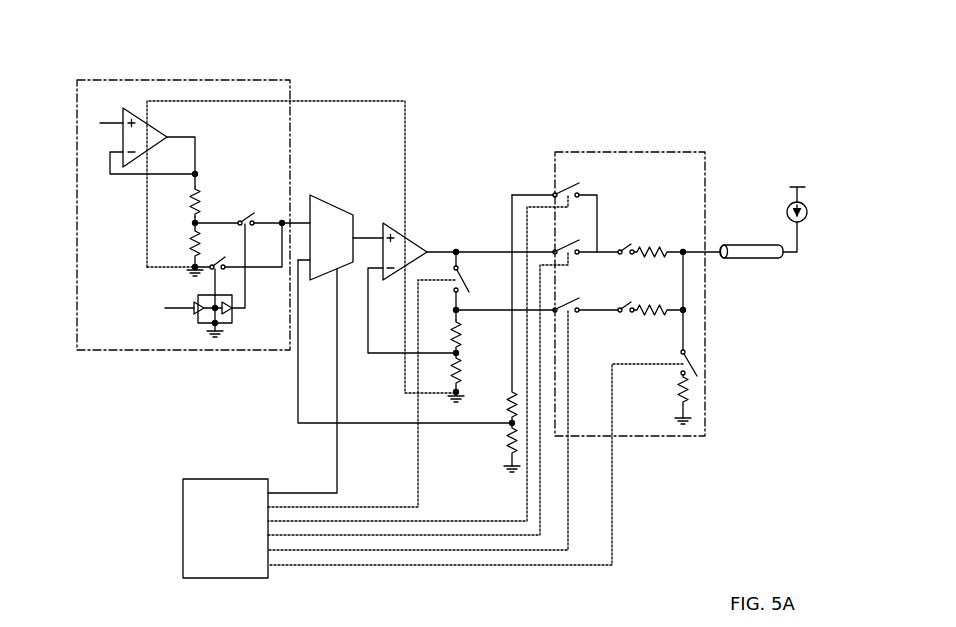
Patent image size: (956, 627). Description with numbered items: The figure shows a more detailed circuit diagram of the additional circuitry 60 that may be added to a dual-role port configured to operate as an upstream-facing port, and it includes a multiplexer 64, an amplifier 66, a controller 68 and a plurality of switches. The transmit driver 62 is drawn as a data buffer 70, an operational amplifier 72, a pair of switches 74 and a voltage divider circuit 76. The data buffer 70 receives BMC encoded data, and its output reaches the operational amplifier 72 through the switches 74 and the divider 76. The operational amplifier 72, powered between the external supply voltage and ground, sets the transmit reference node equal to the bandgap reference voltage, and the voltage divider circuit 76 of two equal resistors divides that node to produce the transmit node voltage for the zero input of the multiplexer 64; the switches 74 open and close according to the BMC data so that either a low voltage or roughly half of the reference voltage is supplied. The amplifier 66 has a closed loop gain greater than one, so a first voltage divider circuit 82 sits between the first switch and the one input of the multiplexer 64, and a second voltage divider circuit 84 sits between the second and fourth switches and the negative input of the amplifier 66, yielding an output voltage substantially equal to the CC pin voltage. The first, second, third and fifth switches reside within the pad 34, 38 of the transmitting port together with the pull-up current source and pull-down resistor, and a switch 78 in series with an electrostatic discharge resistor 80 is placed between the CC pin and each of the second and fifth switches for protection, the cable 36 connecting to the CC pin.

The additional circuitry 60 is at (527, 110).
The transmit driver 62 is at (213, 80).
The operational amplifier 72 is at (160, 125).
The voltage divider circuit 76 is at (205, 203).
The pair of switches 74 is at (233, 236).
The data buffer 70 is at (237, 323).
The multiplexer 64 is at (328, 202).
The amplifier 66 is at (421, 240).
The second voltage divider circuit 84 is at (462, 350).
The first voltage divider circuit 82 is at (501, 391).
The controller 68 is at (213, 478).
The pad 34 is at (623, 279).
The pad 38 is at (612, 150).
The switches 78 is at (628, 257).
The electrostatic discharge resistors 80 is at (648, 245).
The CC cable 36 is at (749, 263).